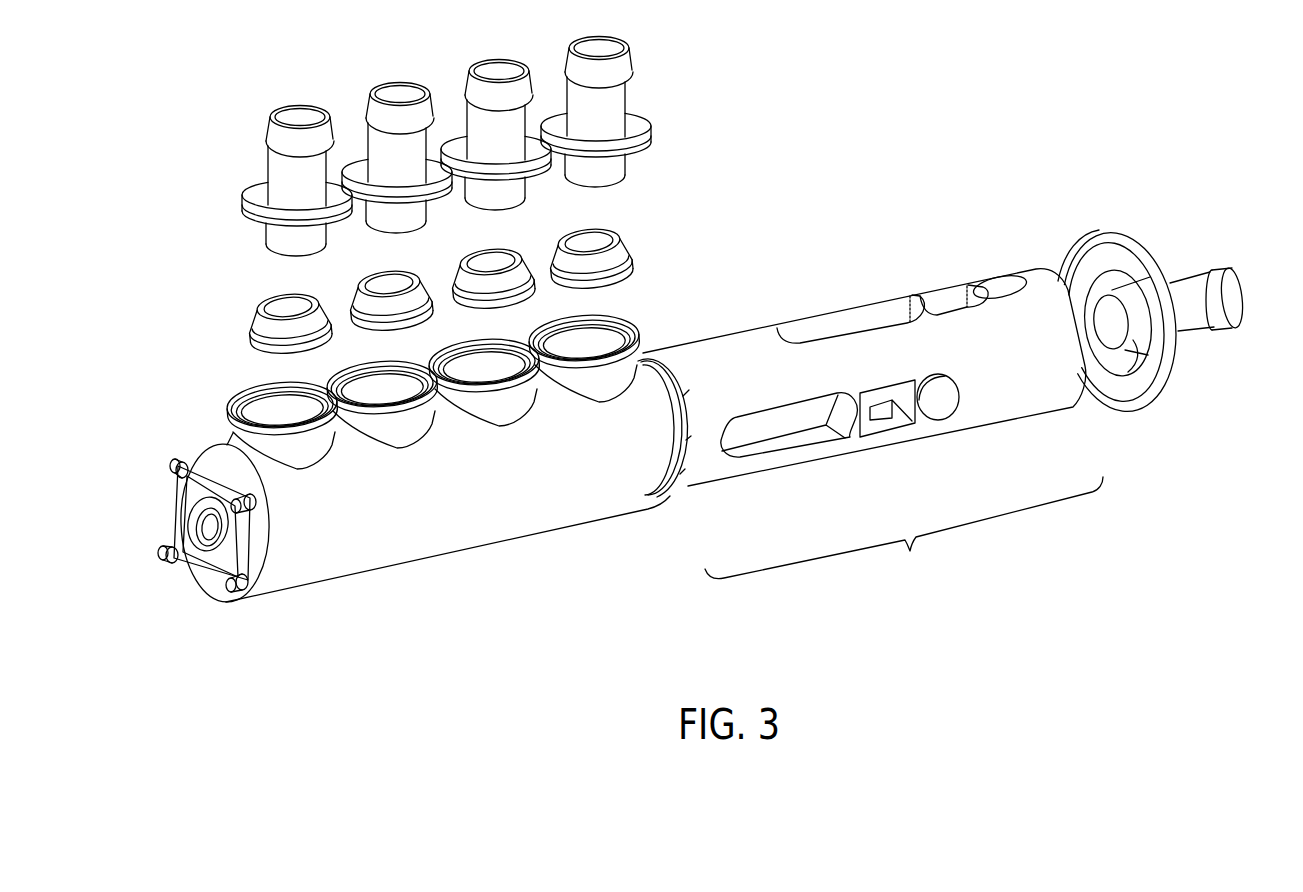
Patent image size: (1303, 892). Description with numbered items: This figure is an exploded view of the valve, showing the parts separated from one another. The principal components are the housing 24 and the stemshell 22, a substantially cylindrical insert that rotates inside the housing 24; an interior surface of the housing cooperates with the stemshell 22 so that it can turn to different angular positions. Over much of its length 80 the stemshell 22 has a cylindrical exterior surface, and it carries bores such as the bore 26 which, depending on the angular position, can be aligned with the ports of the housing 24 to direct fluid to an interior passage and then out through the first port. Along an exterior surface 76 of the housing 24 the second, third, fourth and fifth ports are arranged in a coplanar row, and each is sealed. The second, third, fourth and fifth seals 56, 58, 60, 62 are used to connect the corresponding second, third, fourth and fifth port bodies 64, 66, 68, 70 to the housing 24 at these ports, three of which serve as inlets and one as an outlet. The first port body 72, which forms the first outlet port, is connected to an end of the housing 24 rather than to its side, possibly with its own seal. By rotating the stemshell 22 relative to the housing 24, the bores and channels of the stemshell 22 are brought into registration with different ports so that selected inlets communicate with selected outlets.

The stemshell 22 is at (1023, 385).
The housing 24 is at (550, 502).
The bore 26 is at (937, 407).
The second seal 56 is at (623, 267).
The third seal 58 is at (497, 252).
The fourth seal 60 is at (417, 318).
The fifth seal 62 is at (250, 333).
The second port body 64 is at (617, 98).
The third port body 66 is at (505, 108).
The fourth port body 68 is at (410, 117).
The fifth port body 70 is at (333, 128).
The first port body 72 is at (1188, 310).
The exterior surface 76 is at (312, 552).
The length 80 is at (904, 530).